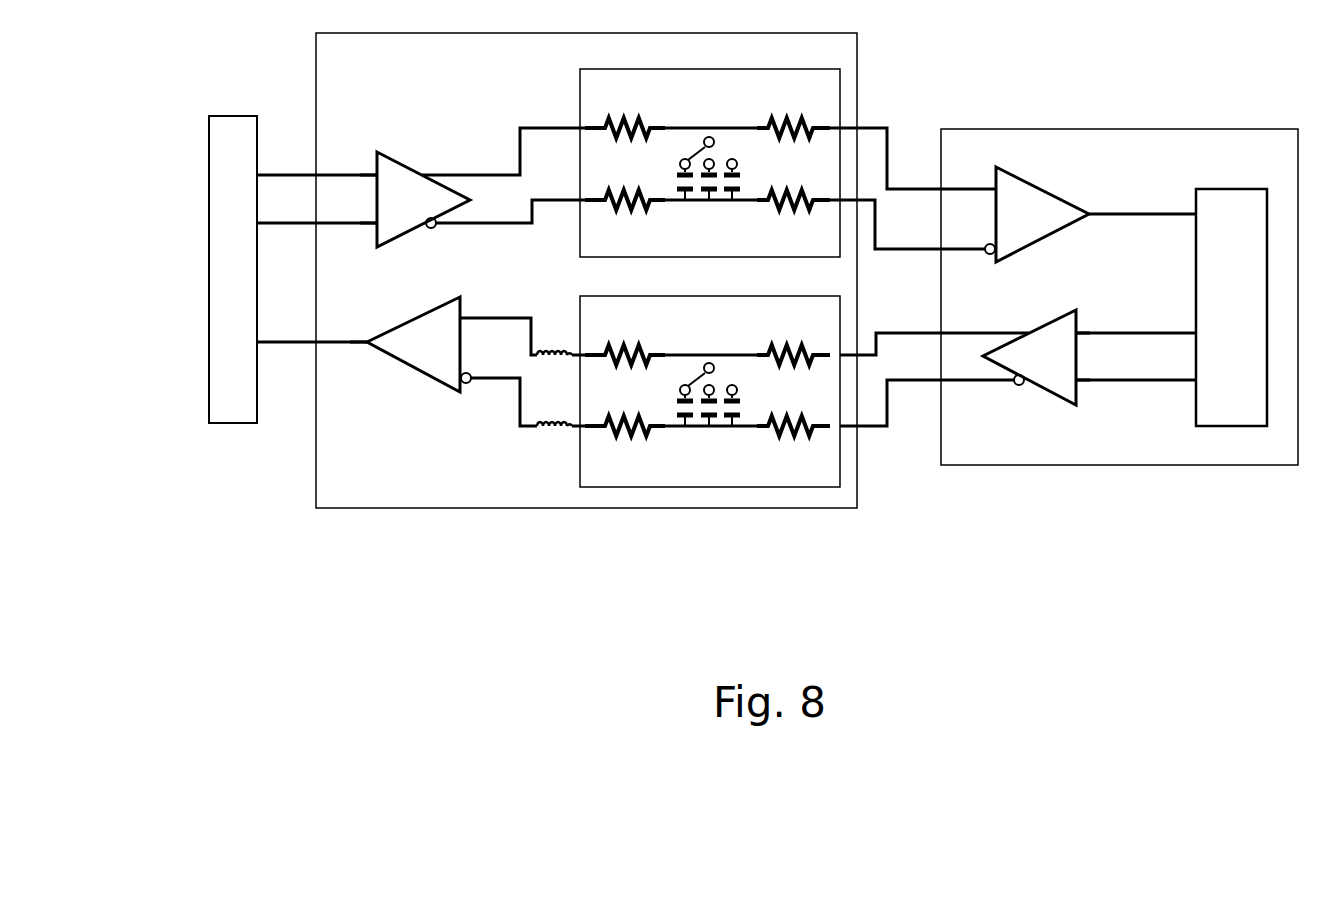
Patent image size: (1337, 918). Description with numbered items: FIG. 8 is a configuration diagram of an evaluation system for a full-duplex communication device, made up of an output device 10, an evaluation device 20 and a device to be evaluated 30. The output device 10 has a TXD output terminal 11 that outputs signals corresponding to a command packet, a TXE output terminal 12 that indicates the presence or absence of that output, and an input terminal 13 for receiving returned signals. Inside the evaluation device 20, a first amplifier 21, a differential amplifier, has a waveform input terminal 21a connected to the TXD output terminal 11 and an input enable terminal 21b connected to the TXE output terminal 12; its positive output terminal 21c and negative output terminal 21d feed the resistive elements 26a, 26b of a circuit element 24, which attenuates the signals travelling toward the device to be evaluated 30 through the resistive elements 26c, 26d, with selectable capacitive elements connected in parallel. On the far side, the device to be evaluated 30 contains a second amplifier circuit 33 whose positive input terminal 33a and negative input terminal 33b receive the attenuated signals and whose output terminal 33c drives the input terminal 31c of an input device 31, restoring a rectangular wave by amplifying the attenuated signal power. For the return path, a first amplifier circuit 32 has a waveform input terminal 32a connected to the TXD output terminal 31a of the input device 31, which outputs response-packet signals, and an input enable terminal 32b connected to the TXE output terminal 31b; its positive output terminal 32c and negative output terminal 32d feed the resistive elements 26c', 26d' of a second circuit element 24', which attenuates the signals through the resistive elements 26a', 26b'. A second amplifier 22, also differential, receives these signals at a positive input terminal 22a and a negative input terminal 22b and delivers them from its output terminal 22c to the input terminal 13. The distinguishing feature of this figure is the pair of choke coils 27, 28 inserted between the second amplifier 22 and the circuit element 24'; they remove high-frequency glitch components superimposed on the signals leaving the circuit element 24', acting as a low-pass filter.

The output device 10 is at (240, 110).
The TXD output terminal 11 is at (302, 176).
The TXE output terminal 12 is at (302, 222).
The input terminal 13 is at (299, 342).
The evaluation device 20 is at (585, 27).
The first amplifier 21 is at (423, 199).
The waveform input terminal 21a is at (366, 173).
The input enable terminal 21b is at (366, 228).
The positive output terminal 21c is at (422, 175).
The negative output terminal 21d is at (431, 230).
The second amplifier 22 is at (413, 344).
The positive input terminal 22a is at (469, 313).
The negative input terminal 22b is at (472, 382).
The output terminal 22c is at (364, 338).
The circuit element 24 is at (710, 146).
The circuit element 24' is at (706, 374).
The resistive element 26a is at (625, 105).
The resistive element 26b is at (625, 221).
The resistive element 26c is at (793, 105).
The resistive element 26d is at (793, 221).
The resistive element 26a' is at (625, 332).
The resistive element 26b' is at (625, 449).
The resistive element 26c' is at (793, 332).
The resistive element 26d' is at (793, 449).
The choke coil 27 is at (553, 348).
The choke coil 28 is at (553, 433).
The device to be evaluated 30 is at (1135, 120).
The input device 31 is at (1241, 170).
The TXD output terminal 31a is at (1155, 332).
The TXE output terminal 31b is at (1155, 381).
The input terminal 31c is at (1191, 216).
The first amplifier circuit 32 is at (1029, 357).
The waveform input terminal 32a is at (1089, 328).
The input enable terminal 32b is at (1085, 384).
The positive output terminal 32c is at (1030, 328).
The negative output terminal 32d is at (1015, 385).
The second amplifier circuit 33 is at (1042, 214).
The positive input terminal 33a is at (985, 188).
The negative input terminal 33b is at (985, 254).
The output terminal 33c is at (1092, 210).